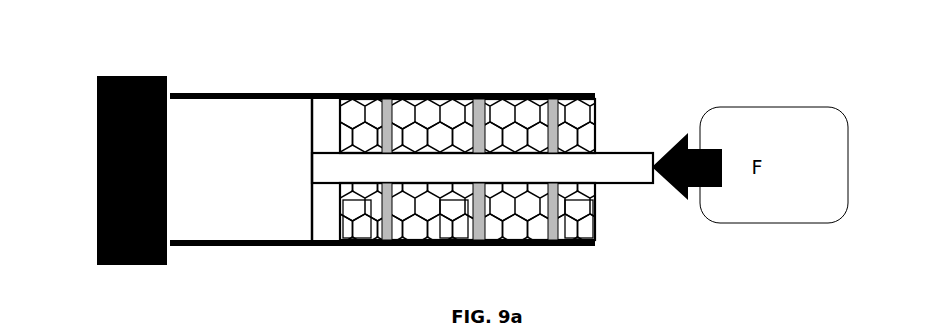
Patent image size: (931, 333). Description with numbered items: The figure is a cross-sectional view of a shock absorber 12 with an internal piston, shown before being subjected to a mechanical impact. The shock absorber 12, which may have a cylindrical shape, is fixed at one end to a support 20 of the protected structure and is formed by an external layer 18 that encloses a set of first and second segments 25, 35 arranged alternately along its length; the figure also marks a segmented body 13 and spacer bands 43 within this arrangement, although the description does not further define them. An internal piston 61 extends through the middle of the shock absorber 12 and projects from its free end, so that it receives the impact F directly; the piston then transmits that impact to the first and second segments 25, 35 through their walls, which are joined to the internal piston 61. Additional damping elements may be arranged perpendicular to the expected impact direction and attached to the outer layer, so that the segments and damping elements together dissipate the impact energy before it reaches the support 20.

The shock absorber 12 is at (237, 73).
The support 20 is at (97, 183).
The external layer 18 is at (434, 93).
The internal piston 61 is at (630, 165).
The honeycomb energy absorbing member 13 is at (595, 222).
The spacer bands 43 is at (388, 93).
The first segments 25 is at (355, 248).
The second segments 35 is at (452, 248).